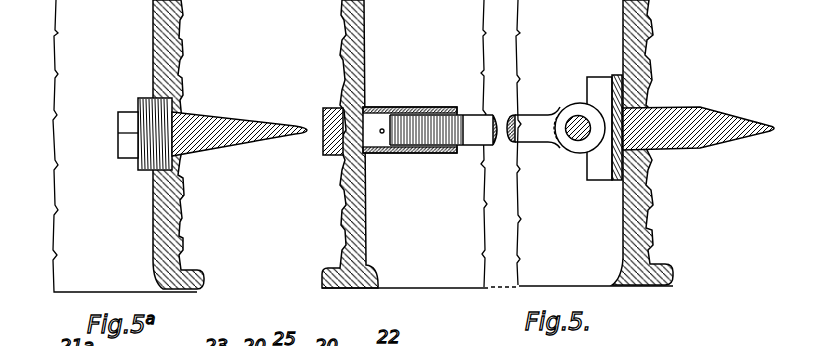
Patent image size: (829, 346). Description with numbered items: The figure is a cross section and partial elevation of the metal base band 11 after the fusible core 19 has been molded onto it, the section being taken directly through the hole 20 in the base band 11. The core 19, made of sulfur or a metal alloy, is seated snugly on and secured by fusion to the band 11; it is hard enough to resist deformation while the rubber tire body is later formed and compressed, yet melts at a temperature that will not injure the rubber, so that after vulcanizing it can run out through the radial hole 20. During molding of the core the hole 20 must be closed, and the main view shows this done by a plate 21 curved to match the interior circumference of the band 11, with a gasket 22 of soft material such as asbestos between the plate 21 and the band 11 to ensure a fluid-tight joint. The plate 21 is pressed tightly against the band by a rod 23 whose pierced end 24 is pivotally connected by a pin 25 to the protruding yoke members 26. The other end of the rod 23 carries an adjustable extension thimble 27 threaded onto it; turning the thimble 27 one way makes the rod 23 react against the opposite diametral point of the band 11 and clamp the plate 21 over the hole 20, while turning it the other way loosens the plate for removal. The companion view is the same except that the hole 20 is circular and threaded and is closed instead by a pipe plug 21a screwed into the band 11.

In FIG. 5A, the metal base band 11 is at (155, 257).
In FIG. 5, the metal base band 11 is at (378, 277).
In FIG. 5A, the core 19 is at (237, 143).
In FIG. 5, the core 19 is at (323, 110).
In FIG. 5A, the hole 20 is at (148, 170).
In FIG. 5, the plate 21 is at (595, 177).
In FIG. 5A, the pipe plug 21a is at (132, 157).
In FIG. 5, the gasket 22 is at (625, 192).
In FIG. 5, the rod 23 is at (480, 118).
In FIG. 5, the pierced end 24 is at (568, 110).
In FIG. 5, the pin 25 is at (575, 137).
In FIG. 5, the yoke members 26 is at (600, 100).
In FIG. 5, the adjustable extension thimble 27 is at (420, 153).